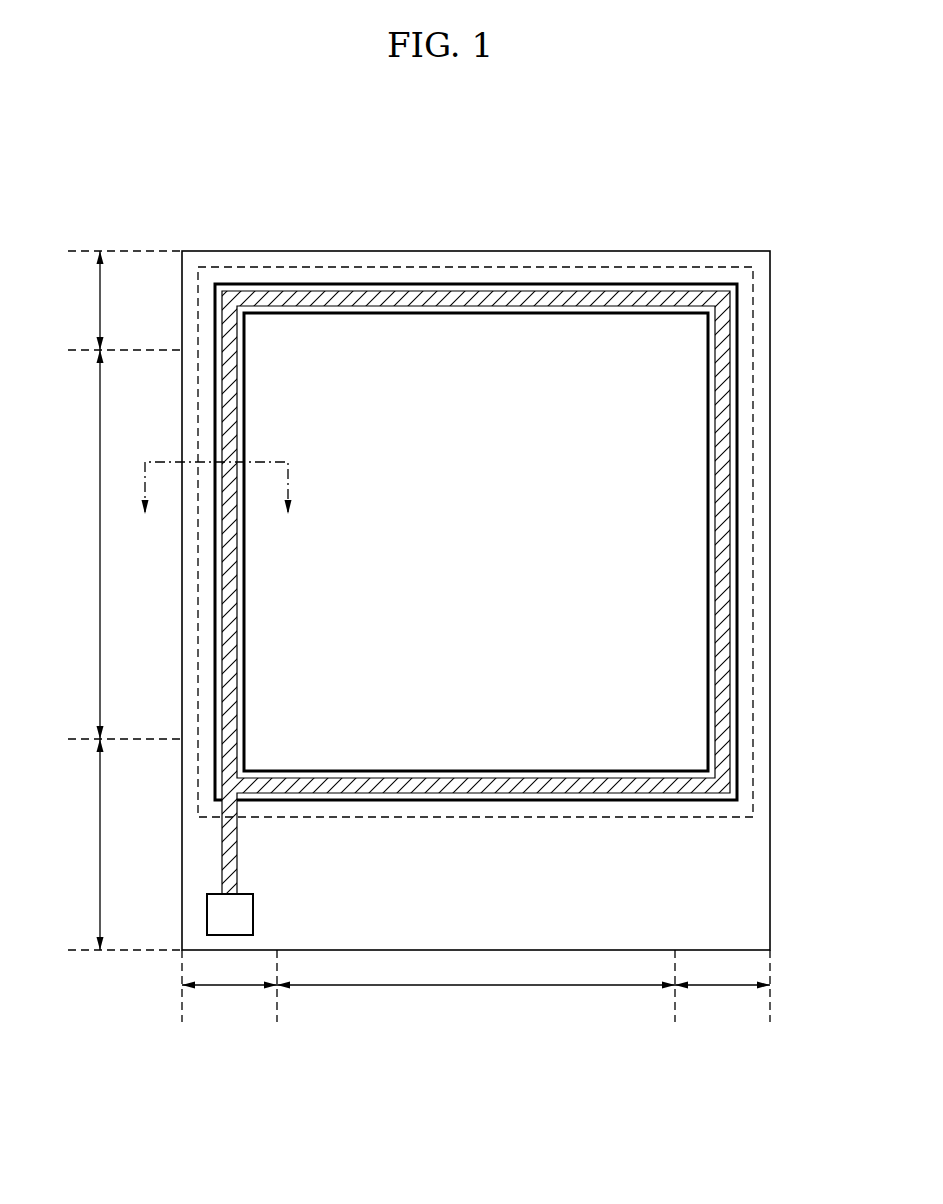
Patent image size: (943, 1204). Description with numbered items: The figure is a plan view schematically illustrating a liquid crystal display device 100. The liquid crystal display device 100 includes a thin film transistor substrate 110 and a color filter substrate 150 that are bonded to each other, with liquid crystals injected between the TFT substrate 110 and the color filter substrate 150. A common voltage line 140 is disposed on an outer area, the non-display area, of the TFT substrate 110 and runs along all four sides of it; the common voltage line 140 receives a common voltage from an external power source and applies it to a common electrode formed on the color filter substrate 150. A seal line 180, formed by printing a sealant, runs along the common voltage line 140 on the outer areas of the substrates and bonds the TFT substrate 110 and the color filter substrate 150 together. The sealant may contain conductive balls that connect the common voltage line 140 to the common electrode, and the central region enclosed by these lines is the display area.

The liquid crystal display device 100 is at (620, 193).
The thin film transistor (TFT) substrate 110 is at (477, 250).
The color filter substrate 150 is at (753, 355).
The seal line 180 is at (737, 455).
The common voltage line 140 is at (723, 530).